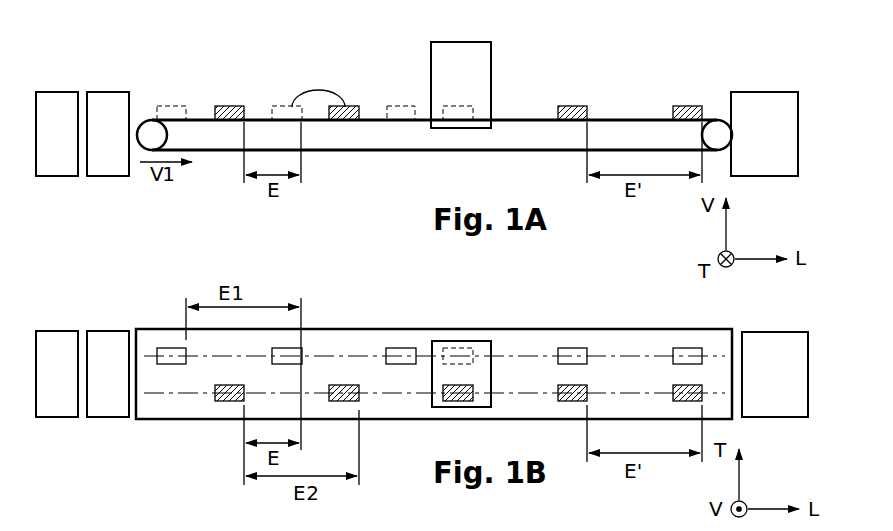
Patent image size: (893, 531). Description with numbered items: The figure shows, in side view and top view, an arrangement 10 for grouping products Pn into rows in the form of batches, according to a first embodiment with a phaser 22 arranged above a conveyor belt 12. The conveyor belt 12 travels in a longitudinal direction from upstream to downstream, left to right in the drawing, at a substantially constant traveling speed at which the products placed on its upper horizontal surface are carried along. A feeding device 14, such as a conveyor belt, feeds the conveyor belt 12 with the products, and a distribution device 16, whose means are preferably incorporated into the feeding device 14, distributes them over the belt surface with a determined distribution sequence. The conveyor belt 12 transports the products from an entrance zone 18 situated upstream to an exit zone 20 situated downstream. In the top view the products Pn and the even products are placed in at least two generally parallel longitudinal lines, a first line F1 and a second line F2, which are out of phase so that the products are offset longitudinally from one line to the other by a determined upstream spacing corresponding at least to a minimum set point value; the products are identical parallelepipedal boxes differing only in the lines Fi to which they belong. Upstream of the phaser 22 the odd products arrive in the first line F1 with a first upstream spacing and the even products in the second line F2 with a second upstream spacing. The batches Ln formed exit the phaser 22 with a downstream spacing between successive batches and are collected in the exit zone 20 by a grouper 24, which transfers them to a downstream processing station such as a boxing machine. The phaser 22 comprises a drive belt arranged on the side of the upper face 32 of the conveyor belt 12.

In FIG. 1A, the arrangement 10 is at (322, 46).
In FIG. 1A, the conveyor belt 12 is at (349, 153).
In FIG. 1B, the conveyor belt 12 is at (407, 327).
In FIG. 1A, the feeding device 14 is at (68, 144).
In FIG. 1B, the feeding device 14 is at (68, 384).
In FIG. 1A, the distribution device 16 is at (119, 144).
In FIG. 1B, the distribution device 16 is at (119, 384).
In FIG. 1A, the entrance zone 18 is at (190, 94).
In FIG. 1A, the exit zone 20 is at (738, 70).
In FIG. 1A, the phaser 22 is at (472, 92).
In FIG. 1B, the phaser 22 is at (476, 340).
In FIG. 1A, the grouper 24 is at (775, 140).
In FIG. 1B, the grouper 24 is at (786, 382).
In FIG. 1B, the upper face 32 is at (537, 356).
In FIG. 1A, the lines Fi is at (160, 91).
In FIG. 1B, the first line F1 is at (157, 342).
In FIG. 1B, the second line F2 is at (204, 401).
In FIG. 1A, the products Pn is at (387, 106).
In FIG. 1B, the products Pn is at (297, 352).
In FIG. 1A, the sheets Ln is at (693, 103).